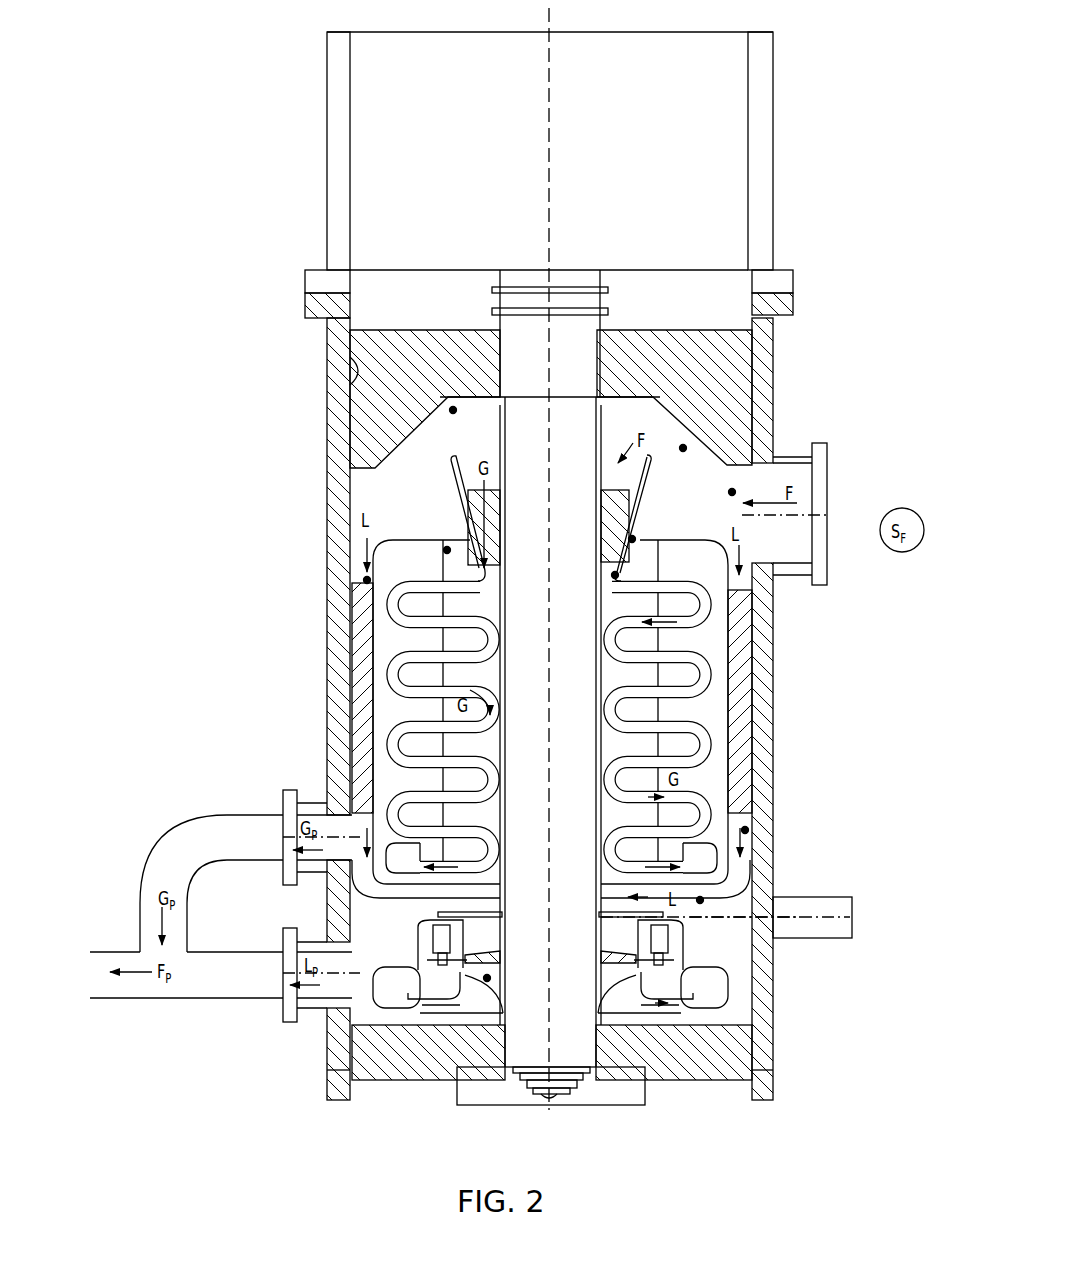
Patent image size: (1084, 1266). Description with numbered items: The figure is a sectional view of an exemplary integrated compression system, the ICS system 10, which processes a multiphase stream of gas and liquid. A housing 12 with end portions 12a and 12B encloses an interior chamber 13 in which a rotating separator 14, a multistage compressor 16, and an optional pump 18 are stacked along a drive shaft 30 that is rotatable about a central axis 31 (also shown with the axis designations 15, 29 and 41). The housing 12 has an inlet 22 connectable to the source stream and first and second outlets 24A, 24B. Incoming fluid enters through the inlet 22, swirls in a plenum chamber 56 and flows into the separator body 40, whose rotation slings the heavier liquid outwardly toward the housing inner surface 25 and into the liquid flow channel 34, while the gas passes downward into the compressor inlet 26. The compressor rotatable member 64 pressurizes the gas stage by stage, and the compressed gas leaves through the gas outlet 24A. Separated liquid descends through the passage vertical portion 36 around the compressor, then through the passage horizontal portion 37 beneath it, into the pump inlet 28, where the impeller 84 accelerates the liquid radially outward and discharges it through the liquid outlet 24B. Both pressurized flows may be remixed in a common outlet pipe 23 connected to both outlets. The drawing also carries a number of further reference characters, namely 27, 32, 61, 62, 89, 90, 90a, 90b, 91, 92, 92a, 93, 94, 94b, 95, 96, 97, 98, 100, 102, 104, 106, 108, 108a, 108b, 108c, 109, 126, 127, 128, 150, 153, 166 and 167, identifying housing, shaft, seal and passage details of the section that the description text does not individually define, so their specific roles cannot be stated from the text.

The ICS system 10 is at (152, 578).
The housing 12 is at (281, 709).
The housing end 12a is at (317, 293).
The housing end 12B is at (775, 1075).
The interior chamber 13 is at (732, 492).
The rotating separator 14 is at (365, 505).
The axis 15 is at (621, 559).
The axis 29 is at (621, 559).
The central axis 31 is at (621, 559).
The central axis 41 is at (549, 22).
The multistage compressor 16 is at (379, 693).
The pump 18 is at (724, 962).
The inlet 22 is at (821, 497).
The common outlet pipe 23 is at (112, 1000).
The first outlet 24A is at (283, 812).
The second outlet 24B is at (287, 1007).
The housing inner surface 25 is at (379, 712).
The compressor inlet 26 is at (725, 699).
The wall 27 is at (355, 620).
The pump inlet 28 is at (438, 962).
The drive shaft 30 is at (510, 355).
The upper chamber 32 is at (375, 180).
The liquid flow channel 34 is at (379, 712).
The passage vertical portion 36 is at (723, 846).
The passage horizontal portion 37 is at (700, 900).
The separator body 40 is at (448, 472).
The plenum chamber 56 is at (683, 448).
The spring finger 61 is at (632, 539).
The bellows mount plate 62 is at (447, 550).
The rotatable member 64 is at (725, 699).
The impeller 84 is at (660, 1000).
The end cap 89 is at (615, 1088).
The housing wall 90 is at (814, 705).
The housing flange 90a is at (765, 303).
The housing lower end 90b is at (765, 1075).
The notch 91 is at (301, 709).
The upper block 92 is at (382, 399).
The upper block 92a is at (705, 386).
The housing wall 93 is at (327, 455).
The bottom plate 94 is at (570, 1091).
The bottom plate bore 94b is at (570, 1091).
The sleeve 95 is at (453, 410).
The inlet pipe 96 is at (800, 452).
The upper flange 97 is at (290, 805).
The lower flange 98 is at (290, 1010).
The elbow pipe 100 is at (140, 918).
The upper housing 102 is at (540, 151).
The upper housing wall 104 is at (737, 160).
The upper housing interior 106 is at (578, 151).
The shaft 108 is at (556, 713).
The shaft upper end 108a is at (556, 333).
The shaft lower end 108b is at (569, 1101).
The shaft middle portion 108c is at (577, 440).
The shaft collar 109 is at (600, 300).
The wall 126 is at (725, 712).
The wall inner surface 127 is at (738, 725).
The inner wall 128 is at (360, 700).
The passage 150 is at (360, 900).
The seal housing 153 is at (470, 935).
The outlet pipe 166 is at (801, 920).
The outlet pipe end 167 is at (835, 897).